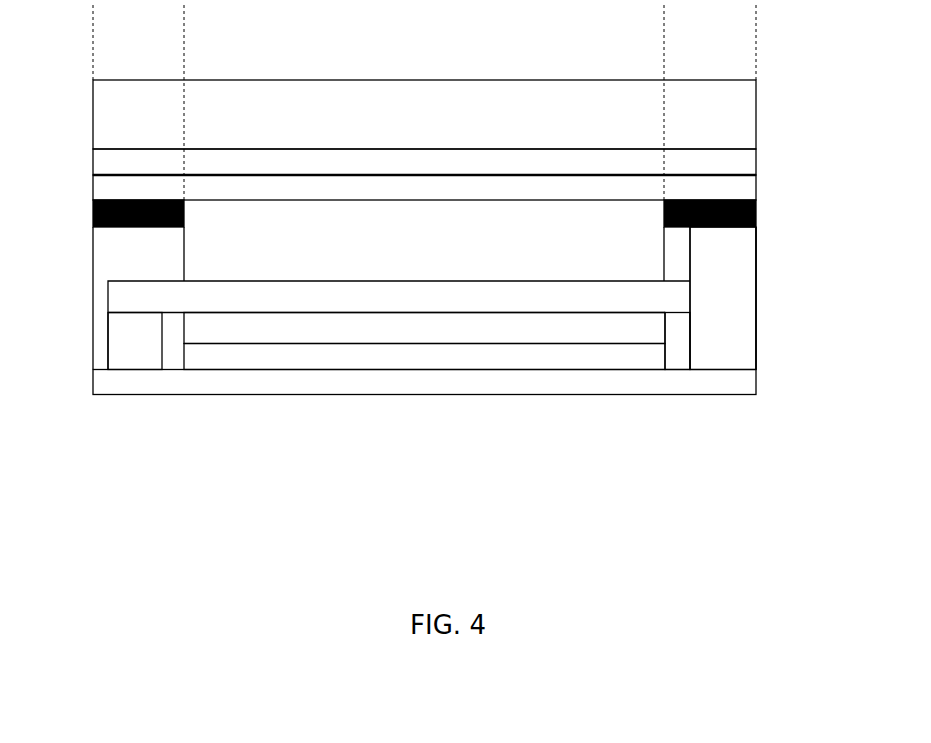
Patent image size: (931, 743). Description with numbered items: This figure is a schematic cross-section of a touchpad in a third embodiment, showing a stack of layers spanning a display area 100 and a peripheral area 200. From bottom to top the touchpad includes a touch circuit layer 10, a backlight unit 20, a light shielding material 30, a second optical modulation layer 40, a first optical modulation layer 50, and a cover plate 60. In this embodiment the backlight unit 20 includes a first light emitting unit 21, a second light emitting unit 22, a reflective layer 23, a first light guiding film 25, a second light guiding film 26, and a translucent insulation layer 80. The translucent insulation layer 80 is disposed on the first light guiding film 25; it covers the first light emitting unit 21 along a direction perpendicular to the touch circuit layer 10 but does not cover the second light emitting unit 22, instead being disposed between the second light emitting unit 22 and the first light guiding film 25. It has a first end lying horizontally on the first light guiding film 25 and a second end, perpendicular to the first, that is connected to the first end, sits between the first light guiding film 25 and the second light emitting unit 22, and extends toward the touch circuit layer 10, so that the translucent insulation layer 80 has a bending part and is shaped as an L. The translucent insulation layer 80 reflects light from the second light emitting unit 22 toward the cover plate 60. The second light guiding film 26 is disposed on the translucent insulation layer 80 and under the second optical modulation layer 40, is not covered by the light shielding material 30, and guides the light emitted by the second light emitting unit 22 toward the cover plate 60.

The touch circuit layer 10 is at (552, 395).
The backlight unit 20 is at (756, 285).
The first light emitting unit 21 is at (108, 355).
The second light emitting unit 22 is at (743, 357).
The reflective layer 23 is at (265, 370).
The first light guiding film 25 is at (397, 337).
The second light guiding film 26 is at (410, 265).
The light shielding material 30 is at (756, 218).
The second optical modulation layer 40 is at (93, 189).
The first optical modulation layer 50 is at (756, 163).
The cover plate 60 is at (93, 107).
The translucent insulation layer 80 is at (674, 355).
The display area 100 is at (663, 48).
The peripheral area 200 is at (94, 62).